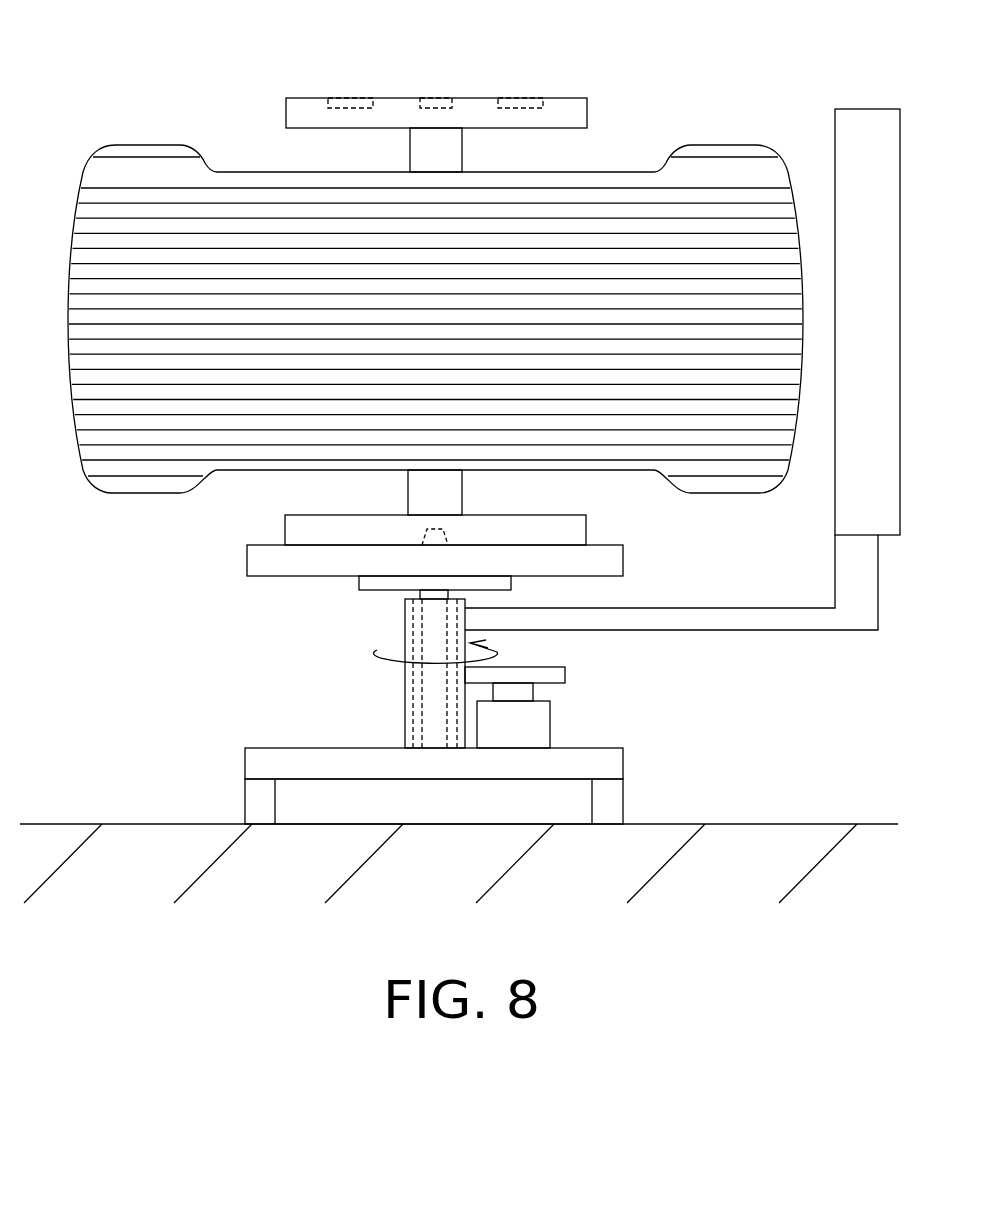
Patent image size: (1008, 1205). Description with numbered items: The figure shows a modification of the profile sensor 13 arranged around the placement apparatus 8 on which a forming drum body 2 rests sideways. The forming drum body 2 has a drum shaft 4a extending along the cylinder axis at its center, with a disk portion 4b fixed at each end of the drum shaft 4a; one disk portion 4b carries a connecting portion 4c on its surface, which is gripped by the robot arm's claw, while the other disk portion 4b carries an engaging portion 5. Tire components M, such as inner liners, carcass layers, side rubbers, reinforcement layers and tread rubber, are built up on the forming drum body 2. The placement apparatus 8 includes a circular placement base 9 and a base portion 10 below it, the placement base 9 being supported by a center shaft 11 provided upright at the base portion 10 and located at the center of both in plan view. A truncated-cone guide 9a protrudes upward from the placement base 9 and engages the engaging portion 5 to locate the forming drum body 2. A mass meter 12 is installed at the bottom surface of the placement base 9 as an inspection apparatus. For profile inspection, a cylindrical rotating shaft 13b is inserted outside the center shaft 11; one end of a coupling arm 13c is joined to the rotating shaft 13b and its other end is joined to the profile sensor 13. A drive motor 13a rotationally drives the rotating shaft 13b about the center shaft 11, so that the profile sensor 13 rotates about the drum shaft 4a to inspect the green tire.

The forming drum body 2 is at (725, 153).
The tire component M is at (143, 167).
The drum shaft 4a is at (418, 160).
The disk portion 4b is at (293, 108).
The connecting portion 4c is at (352, 97).
The engaging portion 5 is at (425, 555).
The placement apparatus 8 is at (509, 420).
The placement base 9 is at (625, 560).
The guide 9a is at (443, 535).
The base portion 10 is at (615, 798).
The center shaft 11 is at (427, 625).
The mass meter 12 is at (358, 582).
The profile sensor 13 is at (840, 487).
The drive motor 13a is at (538, 728).
The rotating shaft 13b is at (413, 705).
The coupling arm 13c is at (713, 622).